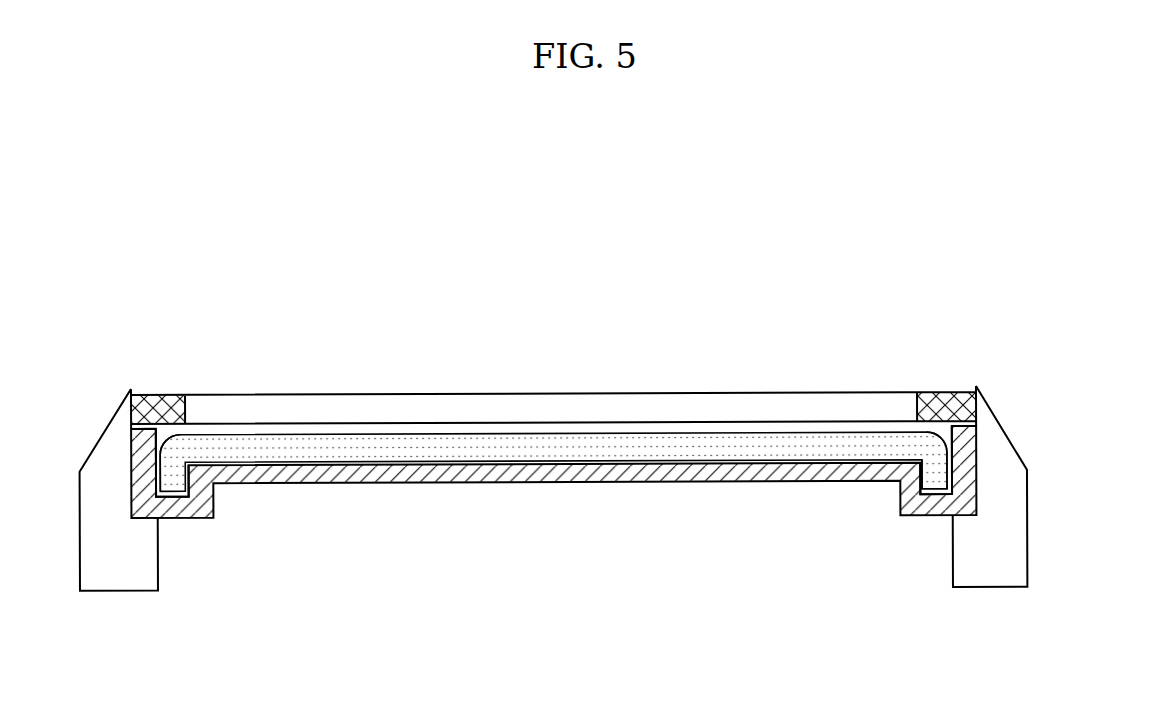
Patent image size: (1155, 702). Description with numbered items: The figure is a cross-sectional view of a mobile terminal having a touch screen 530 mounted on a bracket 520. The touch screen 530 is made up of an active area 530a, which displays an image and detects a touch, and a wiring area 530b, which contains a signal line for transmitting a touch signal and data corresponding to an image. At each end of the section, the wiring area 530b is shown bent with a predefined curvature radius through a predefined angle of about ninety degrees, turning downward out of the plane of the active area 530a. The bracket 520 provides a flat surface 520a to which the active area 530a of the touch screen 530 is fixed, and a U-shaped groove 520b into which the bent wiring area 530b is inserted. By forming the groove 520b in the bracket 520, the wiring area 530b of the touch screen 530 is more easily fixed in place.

The bracket 520 is at (554, 555).
The flat surface 520a is at (868, 475).
The U-shaped groove 520b is at (940, 493).
The touch screen 530 is at (648, 438).
The active area 530a is at (914, 435).
The wiring area 530b is at (940, 450).